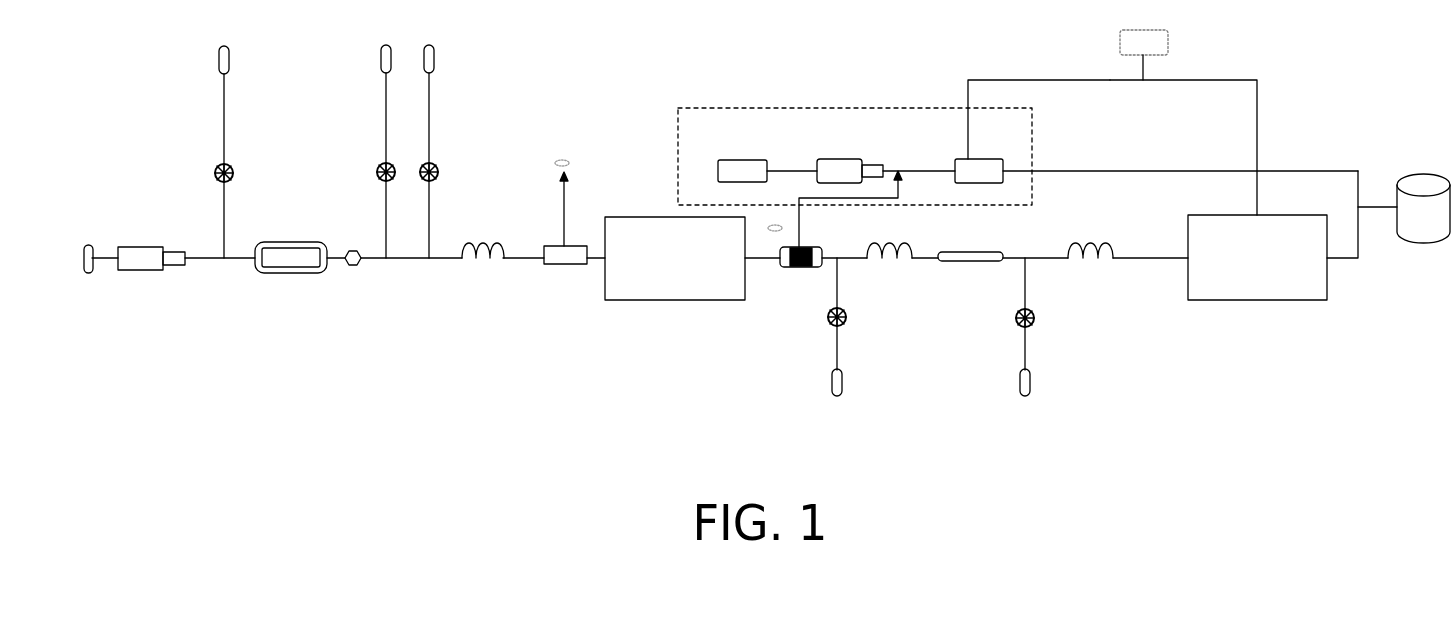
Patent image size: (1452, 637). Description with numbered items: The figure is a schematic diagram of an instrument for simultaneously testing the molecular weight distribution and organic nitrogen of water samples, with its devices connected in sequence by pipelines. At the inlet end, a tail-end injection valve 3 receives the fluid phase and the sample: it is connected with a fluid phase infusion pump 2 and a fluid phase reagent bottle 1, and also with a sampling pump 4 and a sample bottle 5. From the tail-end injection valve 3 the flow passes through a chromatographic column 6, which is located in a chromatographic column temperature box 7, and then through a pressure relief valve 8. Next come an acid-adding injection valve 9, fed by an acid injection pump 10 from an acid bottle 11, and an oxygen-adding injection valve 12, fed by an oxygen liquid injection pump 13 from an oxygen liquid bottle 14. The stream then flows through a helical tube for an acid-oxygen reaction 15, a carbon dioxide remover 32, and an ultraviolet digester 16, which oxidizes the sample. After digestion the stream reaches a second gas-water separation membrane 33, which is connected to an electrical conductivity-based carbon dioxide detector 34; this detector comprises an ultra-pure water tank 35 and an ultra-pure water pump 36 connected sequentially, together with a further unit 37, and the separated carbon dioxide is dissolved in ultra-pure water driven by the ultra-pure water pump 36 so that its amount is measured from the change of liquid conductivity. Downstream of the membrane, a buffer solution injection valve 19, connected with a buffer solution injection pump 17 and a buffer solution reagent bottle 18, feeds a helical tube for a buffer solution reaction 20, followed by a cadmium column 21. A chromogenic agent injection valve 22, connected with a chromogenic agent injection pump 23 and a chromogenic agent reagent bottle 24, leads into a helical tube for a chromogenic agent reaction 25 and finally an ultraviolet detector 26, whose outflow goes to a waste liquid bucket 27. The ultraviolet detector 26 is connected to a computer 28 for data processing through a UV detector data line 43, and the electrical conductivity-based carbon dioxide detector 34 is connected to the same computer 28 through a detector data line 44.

The fluid phase reagent bottle 1 is at (87, 245).
The fluid phase infusion pump 2 is at (151, 245).
The tail-end injection valve 3 is at (221, 181).
The sampling pump 4 is at (215, 176).
The sample bottle 5 is at (215, 61).
The chromatographic column 6 is at (291, 259).
The chromatographic column temperature box 7 is at (291, 273).
The pressure relief valve 8 is at (353, 271).
The acid-adding injection valve 9 is at (384, 180).
The acid injection pump 10 is at (370, 175).
The acid bottle 11 is at (370, 59).
The oxygen-adding injection valve 12 is at (430, 180).
The oxygen liquid injection pump 13 is at (444, 168).
The oxygen liquid bottle 14 is at (445, 59).
The helical tube for an acid-oxygen reaction 15 is at (484, 267).
The ultraviolet digester 16 is at (675, 258).
The buffer solution injection pump 17 is at (850, 320).
The buffer solution reagent bottle 18 is at (852, 382).
The buffer solution injection valve 19 is at (840, 301).
The helical tube for a buffer solution reaction 20 is at (889, 269).
The cadmium column 21 is at (970, 271).
The chromogenic agent injection valve 22 is at (1027, 299).
The chromogenic agent injection pump 23 is at (1039, 321).
The chromogenic agent reagent bottle 24 is at (1042, 383).
The helical tube for a chromogenic agent reaction 25 is at (1090, 239).
The ultraviolet detector 26 is at (1273, 235).
The waste liquid bucket 27 is at (1404, 208).
The computer for data processing 28 is at (1144, 42).
The carbon dioxide remover 32 is at (565, 226).
The second gas-water separation membrane 33 is at (835, 233).
The electrical conductivity-based CO2 detector 34 is at (852, 145).
The ultra-pure water tank 35 is at (767, 160).
The ultra-pure water pump 36 is at (886, 160).
The signal processing unit 37 is at (1156, 160).
The UV detector data line 43 is at (1183, 134).
The electrical conductivity-based CO2 detector data line 44 is at (1039, 109).